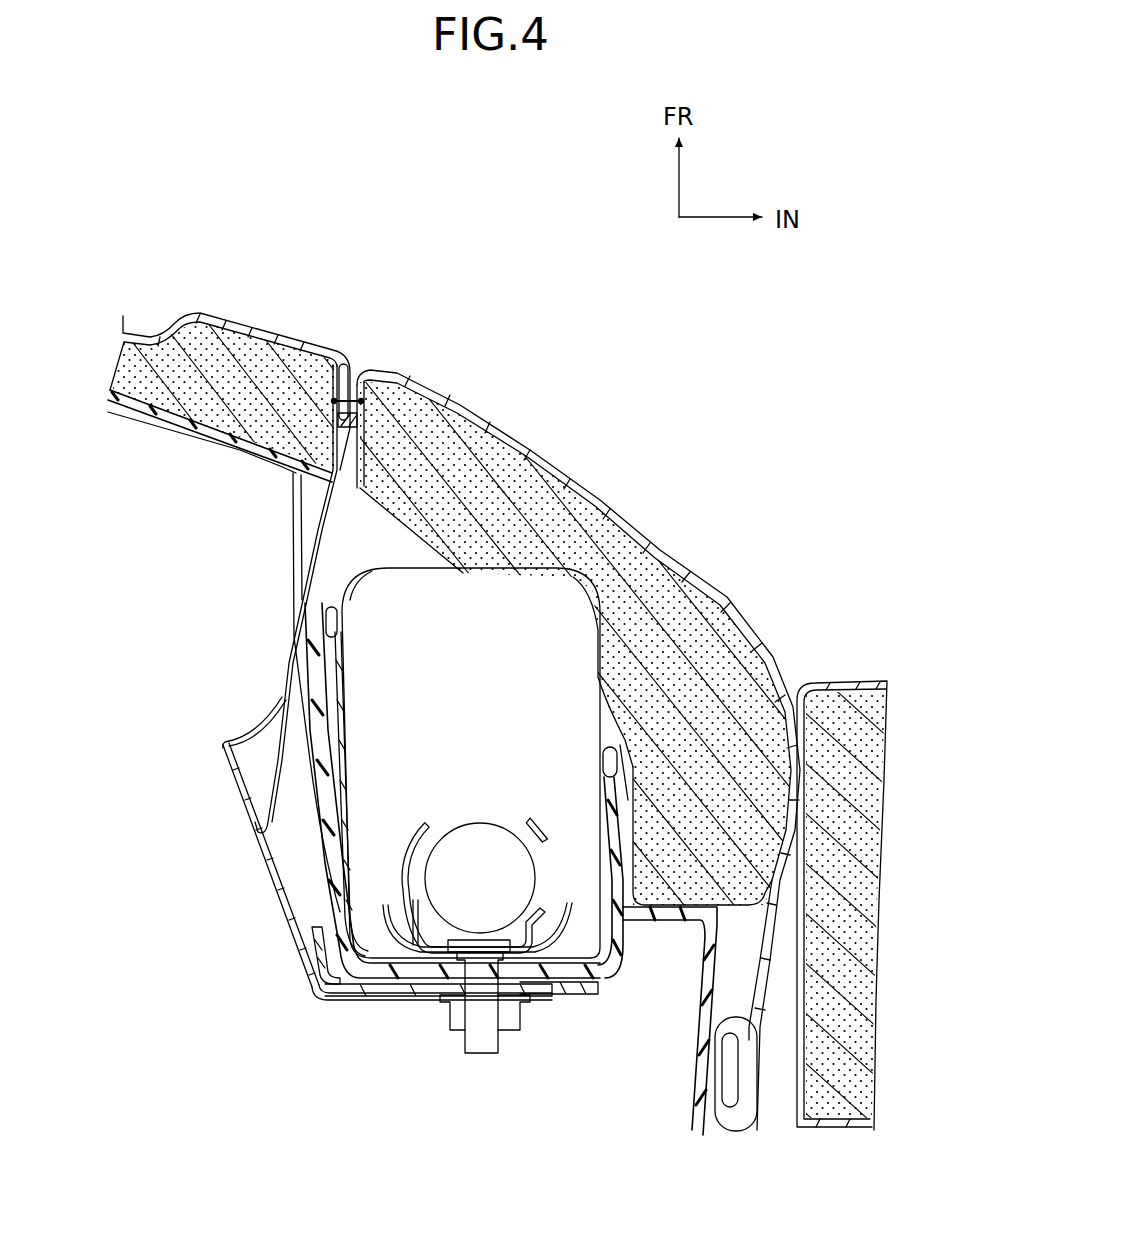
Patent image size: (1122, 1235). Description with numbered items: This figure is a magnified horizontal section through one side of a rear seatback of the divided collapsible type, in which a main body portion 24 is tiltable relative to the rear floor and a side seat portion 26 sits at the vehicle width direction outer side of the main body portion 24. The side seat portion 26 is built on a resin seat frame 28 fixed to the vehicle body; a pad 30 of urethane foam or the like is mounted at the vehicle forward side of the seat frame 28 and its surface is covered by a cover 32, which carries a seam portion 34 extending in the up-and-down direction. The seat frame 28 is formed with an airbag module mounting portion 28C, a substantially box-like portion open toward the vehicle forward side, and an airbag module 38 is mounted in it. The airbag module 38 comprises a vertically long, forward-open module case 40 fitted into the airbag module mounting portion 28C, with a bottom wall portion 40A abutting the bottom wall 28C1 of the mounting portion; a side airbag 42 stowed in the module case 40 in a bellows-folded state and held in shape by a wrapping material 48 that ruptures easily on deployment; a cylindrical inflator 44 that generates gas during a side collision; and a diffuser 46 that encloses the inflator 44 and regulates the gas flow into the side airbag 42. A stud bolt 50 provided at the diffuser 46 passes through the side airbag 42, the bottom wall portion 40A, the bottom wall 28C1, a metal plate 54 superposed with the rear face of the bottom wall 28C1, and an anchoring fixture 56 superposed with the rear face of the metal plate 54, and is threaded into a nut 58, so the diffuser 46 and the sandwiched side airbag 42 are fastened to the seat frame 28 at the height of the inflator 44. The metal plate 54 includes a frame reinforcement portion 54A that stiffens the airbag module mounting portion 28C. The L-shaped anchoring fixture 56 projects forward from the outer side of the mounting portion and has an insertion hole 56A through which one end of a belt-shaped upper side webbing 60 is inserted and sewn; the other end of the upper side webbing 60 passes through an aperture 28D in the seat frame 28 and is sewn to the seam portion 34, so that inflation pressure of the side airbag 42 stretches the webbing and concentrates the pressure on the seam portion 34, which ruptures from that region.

The main body portion 24 is at (858, 646).
The side seat portion 26 is at (484, 322).
The seat frame 28 is at (620, 968).
The airbag module mounting portion 28C is at (307, 697).
The bottom wall 28C1 is at (403, 975).
The aperture 28D is at (237, 447).
The pad 30 is at (512, 495).
The cover 32 is at (648, 538).
The seam portion 34 is at (367, 350).
The airbag module 38 is at (577, 565).
The module case 40 is at (350, 673).
The bottom wall portion 40A is at (557, 987).
The side airbag 42 is at (390, 918).
The inflator 44 is at (483, 823).
The diffuser 46 is at (410, 843).
The wrapping material 48 is at (355, 585).
The stud bolt 50 is at (480, 1053).
The metal plate 54 is at (352, 987).
The frame reinforcement portion 54A is at (313, 943).
The anchoring fixture 56 is at (310, 988).
The insertion hole 56A is at (265, 845).
The nut 58 is at (498, 1033).
The upper side webbing 60 is at (323, 507).